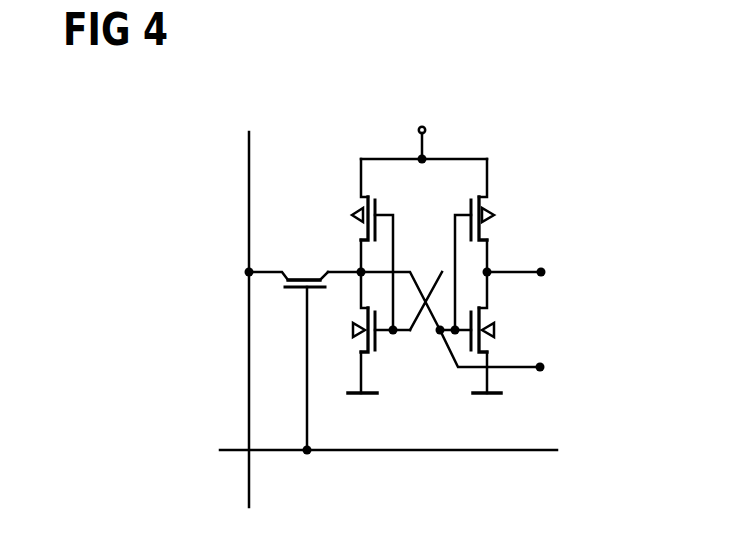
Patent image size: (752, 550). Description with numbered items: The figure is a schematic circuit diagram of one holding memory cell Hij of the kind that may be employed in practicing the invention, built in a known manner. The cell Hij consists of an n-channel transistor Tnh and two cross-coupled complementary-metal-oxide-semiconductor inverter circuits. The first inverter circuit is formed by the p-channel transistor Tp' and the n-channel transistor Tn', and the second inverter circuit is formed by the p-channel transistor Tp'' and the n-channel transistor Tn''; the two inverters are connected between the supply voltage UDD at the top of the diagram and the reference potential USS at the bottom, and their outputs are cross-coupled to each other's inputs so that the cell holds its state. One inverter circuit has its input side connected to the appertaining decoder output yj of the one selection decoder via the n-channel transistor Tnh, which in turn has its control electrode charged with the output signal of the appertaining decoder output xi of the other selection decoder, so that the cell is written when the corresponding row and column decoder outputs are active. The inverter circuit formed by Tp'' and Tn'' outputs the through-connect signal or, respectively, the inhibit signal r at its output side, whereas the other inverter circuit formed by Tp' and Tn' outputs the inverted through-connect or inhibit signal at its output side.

The p-channel transistor of first CMOS inverter circuit Tp' is at (355, 265).
The p-channel transistor of second CMOS inverter circuit Tp'' is at (489, 265).
The n-channel transistor of first CMOS inverter circuit Tn' is at (348, 330).
The n-channel transistor of second CMOS inverter circuit Tn'' is at (500, 330).
The n-channel transistor Tnh is at (288, 341).
The supply voltage terminal UDD is at (424, 125).
The reference potential (ground) USS is at (431, 421).
The holding memory cell Hij is at (452, 433).
The through-connect or inhibit signal r is at (522, 274).
The decoder output of the one selection decoder yj is at (235, 319).
The decoder output of the other selection decoder xi is at (388, 470).